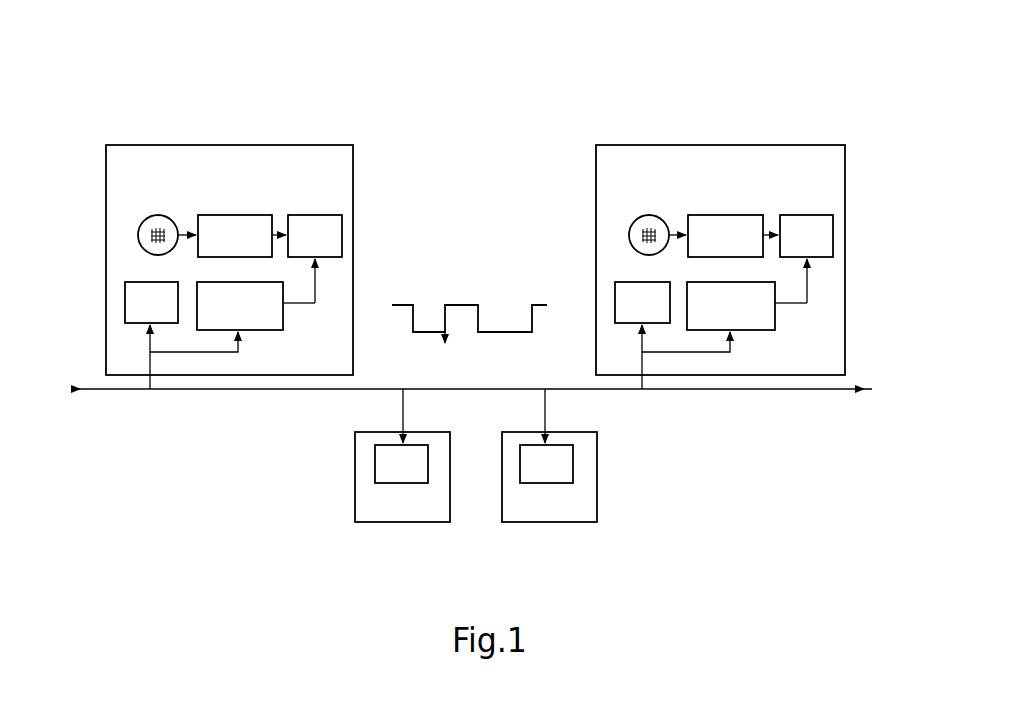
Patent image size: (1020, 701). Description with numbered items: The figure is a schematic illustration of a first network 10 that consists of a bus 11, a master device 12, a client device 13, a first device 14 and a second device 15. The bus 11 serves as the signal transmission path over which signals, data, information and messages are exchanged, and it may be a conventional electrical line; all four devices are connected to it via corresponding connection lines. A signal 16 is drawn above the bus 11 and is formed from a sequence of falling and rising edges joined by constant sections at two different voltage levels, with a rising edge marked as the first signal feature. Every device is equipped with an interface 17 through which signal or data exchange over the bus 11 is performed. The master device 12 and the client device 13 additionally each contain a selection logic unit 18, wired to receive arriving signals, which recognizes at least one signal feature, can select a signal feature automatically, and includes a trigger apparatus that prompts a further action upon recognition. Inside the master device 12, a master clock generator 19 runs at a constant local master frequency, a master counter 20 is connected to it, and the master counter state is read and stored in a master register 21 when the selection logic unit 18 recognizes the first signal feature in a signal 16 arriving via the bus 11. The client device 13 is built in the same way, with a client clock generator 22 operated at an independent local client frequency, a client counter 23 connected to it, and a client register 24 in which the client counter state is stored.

The first network 10 is at (704, 66).
The bus 11 is at (790, 393).
The master device 12 is at (197, 162).
The client device 13 is at (748, 163).
The first device 14 is at (410, 495).
The second device 15 is at (568, 498).
The signal 16 is at (410, 305).
The interface 17 is at (135, 300).
The selection logic unit 18 is at (258, 312).
The master clock generator 19 is at (135, 222).
The master counter 20 is at (212, 218).
The master register 21 is at (310, 233).
The client clock generator 22 is at (628, 232).
The client counter 23 is at (728, 222).
The client register 24 is at (812, 230).